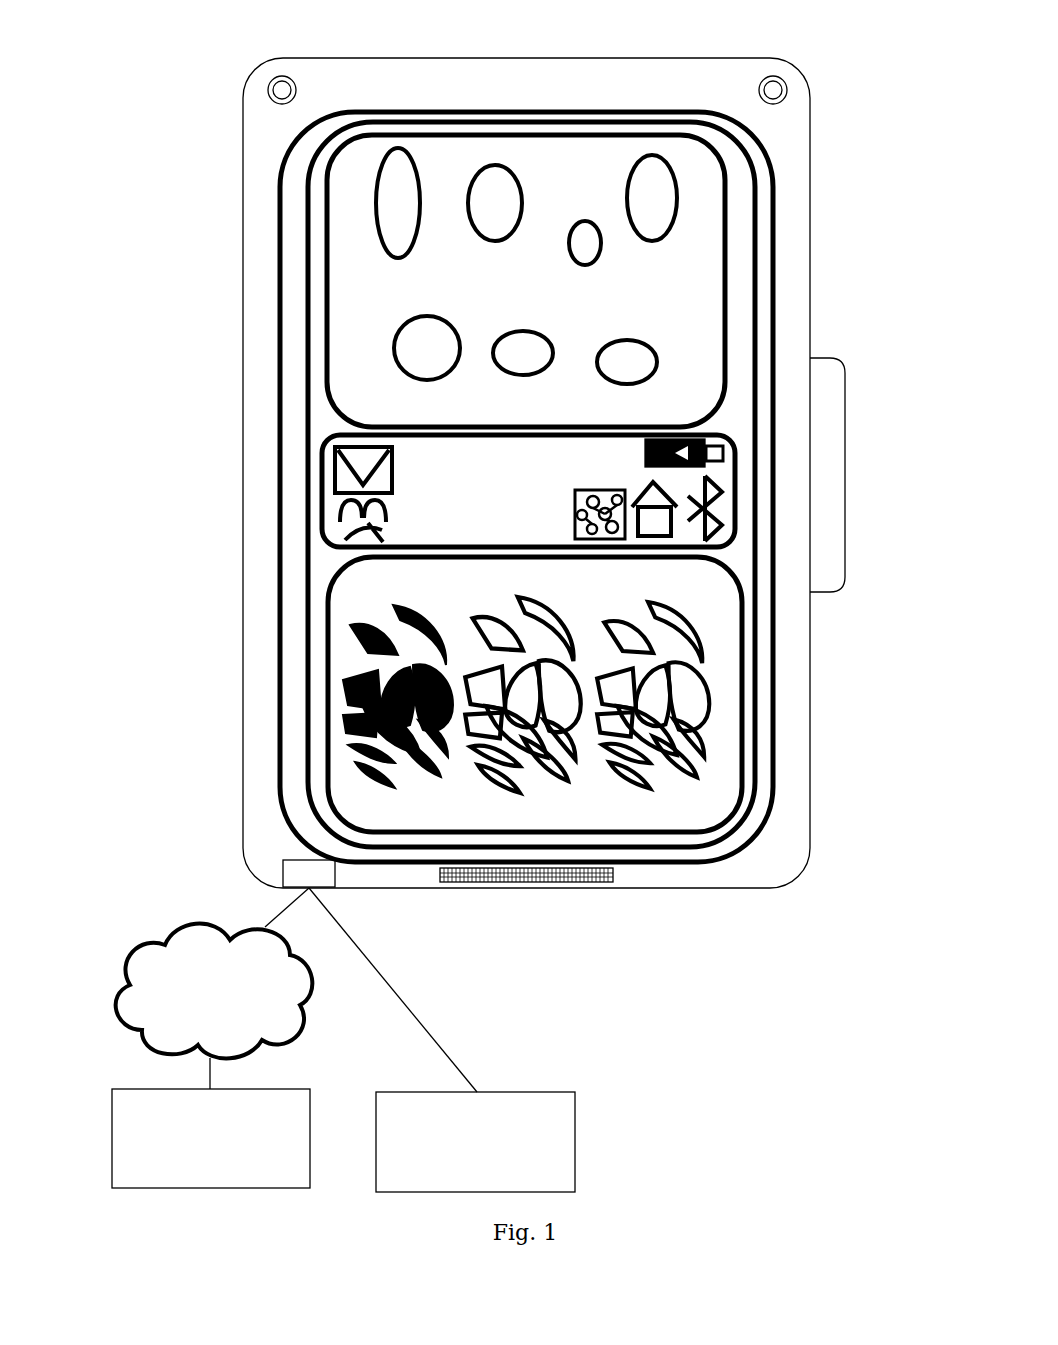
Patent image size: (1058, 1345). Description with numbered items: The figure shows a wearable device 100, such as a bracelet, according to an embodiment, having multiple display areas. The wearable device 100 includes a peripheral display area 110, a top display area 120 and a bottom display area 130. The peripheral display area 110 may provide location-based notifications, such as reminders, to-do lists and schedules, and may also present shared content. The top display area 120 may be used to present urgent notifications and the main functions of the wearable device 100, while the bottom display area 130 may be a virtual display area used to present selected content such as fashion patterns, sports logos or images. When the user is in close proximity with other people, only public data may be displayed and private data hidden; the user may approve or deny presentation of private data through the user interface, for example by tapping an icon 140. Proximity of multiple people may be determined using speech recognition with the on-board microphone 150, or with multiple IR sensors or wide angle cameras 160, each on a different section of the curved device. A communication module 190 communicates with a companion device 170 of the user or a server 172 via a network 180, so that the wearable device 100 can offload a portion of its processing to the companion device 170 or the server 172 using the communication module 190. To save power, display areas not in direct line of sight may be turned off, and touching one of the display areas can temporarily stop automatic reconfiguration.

The wearable device 100 is at (150, 88).
The peripheral display area 110 is at (335, 267).
The top display area 120 is at (328, 500).
The bottom display area 130 is at (335, 650).
The icon 140 is at (608, 540).
The microphone 150 is at (513, 882).
The wide angle cameras 160 is at (297, 90).
The companion device 170 is at (575, 1140).
The server 172 is at (112, 1132).
The network 180 is at (155, 935).
The communication module 190 is at (335, 873).